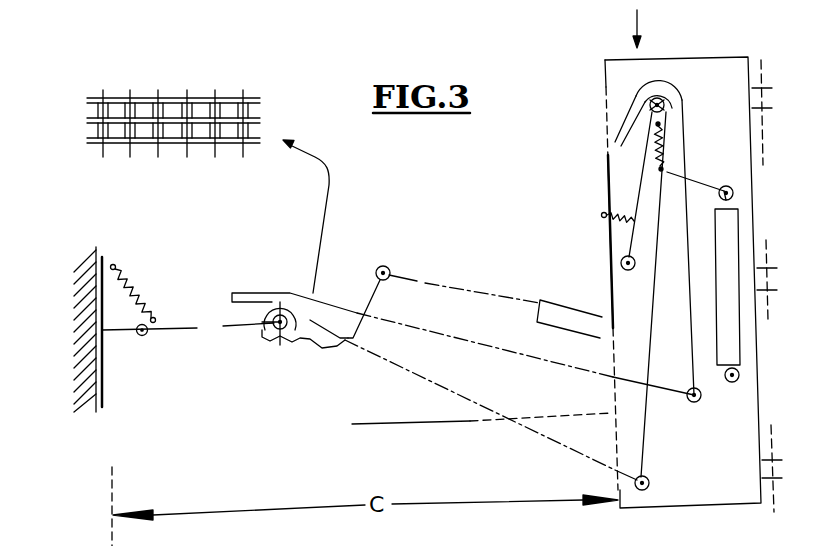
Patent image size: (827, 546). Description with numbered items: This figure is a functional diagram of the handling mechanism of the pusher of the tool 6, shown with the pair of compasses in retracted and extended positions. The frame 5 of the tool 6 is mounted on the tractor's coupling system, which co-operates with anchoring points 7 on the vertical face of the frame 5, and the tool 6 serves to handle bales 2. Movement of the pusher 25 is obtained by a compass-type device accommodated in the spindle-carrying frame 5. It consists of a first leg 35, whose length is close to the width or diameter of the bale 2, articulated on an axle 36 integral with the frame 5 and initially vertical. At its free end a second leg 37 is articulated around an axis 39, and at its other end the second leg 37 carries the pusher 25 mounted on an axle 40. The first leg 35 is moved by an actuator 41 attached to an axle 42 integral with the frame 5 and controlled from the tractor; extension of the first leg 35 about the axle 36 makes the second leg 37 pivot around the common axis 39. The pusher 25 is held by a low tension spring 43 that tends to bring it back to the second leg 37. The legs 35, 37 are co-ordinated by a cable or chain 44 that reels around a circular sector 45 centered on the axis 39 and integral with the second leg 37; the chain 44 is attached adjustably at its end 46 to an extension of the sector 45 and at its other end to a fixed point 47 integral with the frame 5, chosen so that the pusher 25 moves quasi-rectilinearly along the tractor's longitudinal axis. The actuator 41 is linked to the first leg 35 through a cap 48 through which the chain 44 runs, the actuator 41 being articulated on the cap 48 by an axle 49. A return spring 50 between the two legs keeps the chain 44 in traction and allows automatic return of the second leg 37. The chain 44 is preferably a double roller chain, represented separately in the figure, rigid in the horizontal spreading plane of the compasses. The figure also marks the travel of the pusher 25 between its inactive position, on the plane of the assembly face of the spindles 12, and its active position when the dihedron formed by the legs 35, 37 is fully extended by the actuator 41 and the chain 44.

The bale 2 is at (82, 265).
The frame 5 is at (712, 57).
The tool 6 is at (637, 18).
The anchoring points 7 is at (755, 88).
The spindles 12 is at (368, 424).
The pusher 25 is at (104, 395).
The first leg 35 is at (650, 437).
The axle 36 is at (650, 485).
The second leg 37 is at (206, 326).
The axis 39 is at (279, 304).
The axle 40 is at (147, 334).
The actuator 41 is at (417, 282).
The axle 42 is at (739, 378).
The low tension spring 43 is at (116, 266).
The chain 44 is at (222, 98).
The circular sector 45 is at (322, 312).
The end 46 is at (232, 292).
The fixed point 47 is at (700, 400).
The cap 48 is at (697, 180).
The axle 49 is at (728, 187).
The return spring 50 is at (668, 130).